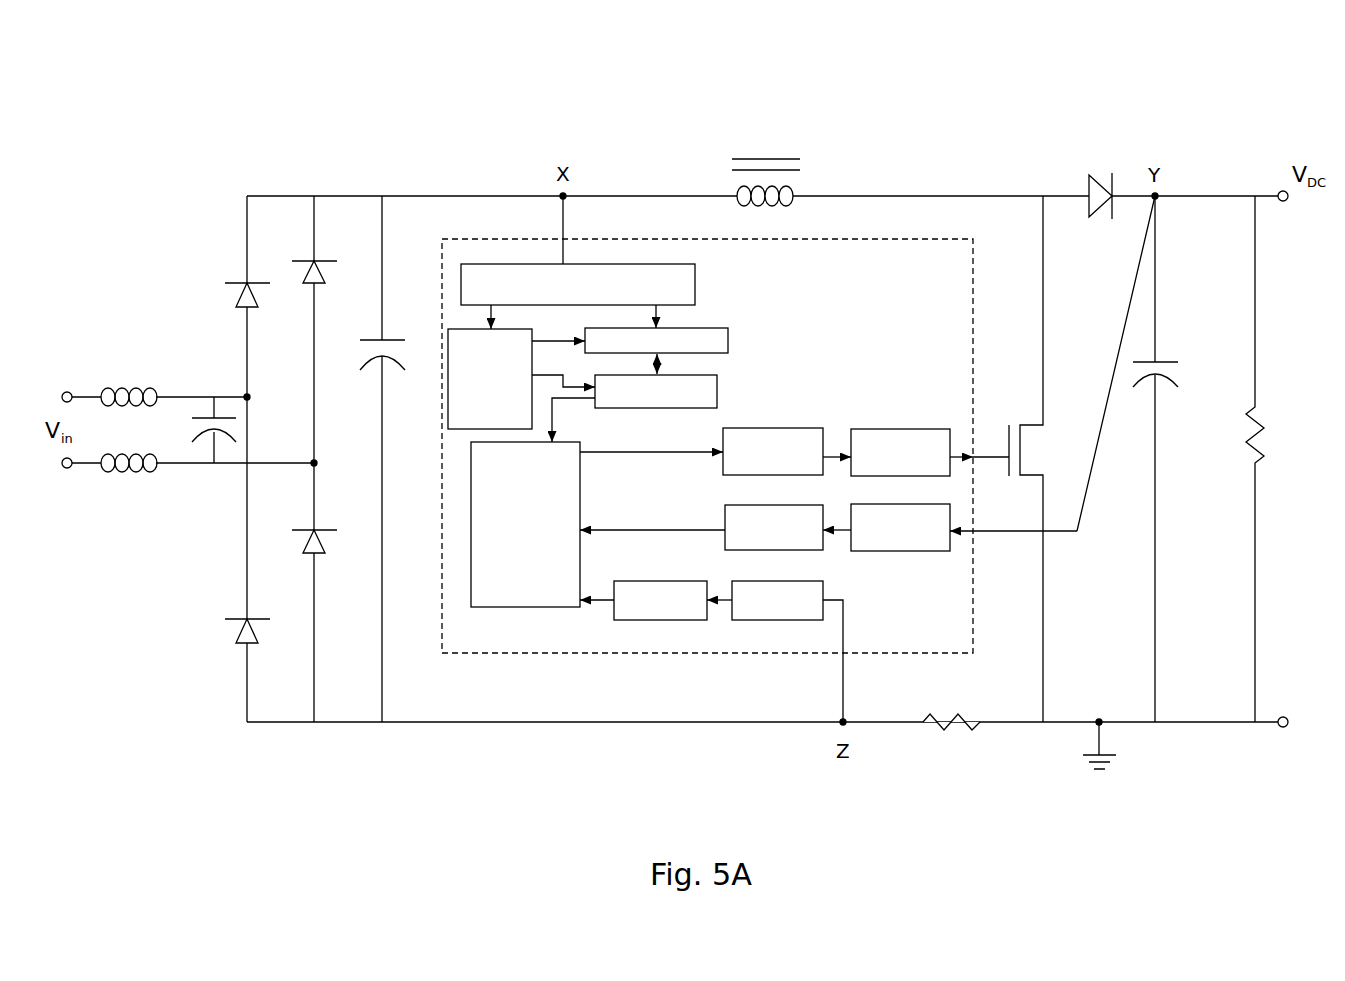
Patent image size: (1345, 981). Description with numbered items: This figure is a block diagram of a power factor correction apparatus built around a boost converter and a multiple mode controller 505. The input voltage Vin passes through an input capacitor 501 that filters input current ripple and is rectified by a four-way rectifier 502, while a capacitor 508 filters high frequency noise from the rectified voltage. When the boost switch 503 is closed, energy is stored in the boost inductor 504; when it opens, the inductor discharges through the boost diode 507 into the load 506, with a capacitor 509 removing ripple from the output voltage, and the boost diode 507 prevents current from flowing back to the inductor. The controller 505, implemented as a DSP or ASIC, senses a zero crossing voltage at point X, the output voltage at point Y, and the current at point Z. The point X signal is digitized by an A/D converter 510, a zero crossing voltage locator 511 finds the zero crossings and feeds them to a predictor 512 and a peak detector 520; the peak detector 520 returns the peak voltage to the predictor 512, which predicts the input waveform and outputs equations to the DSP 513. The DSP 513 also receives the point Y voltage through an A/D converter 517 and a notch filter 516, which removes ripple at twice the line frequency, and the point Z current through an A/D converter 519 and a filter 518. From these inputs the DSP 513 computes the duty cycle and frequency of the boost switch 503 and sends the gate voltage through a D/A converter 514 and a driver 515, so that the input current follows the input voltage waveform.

The capacitor 501 is at (194, 430).
The four-way rectifier 502 is at (266, 443).
The boost switch 503 is at (1008, 459).
The boost inductor 504 is at (766, 163).
The controller 505 is at (704, 468).
The load 506 is at (1281, 459).
The boost diode 507 is at (1102, 174).
The capacitor 508 is at (372, 368).
The capacitor 509 is at (1169, 459).
The A/D converter 510 is at (578, 286).
The zero crossing voltage locator 511 is at (521, 368).
The predictor 512 is at (657, 408).
The DSP 513 is at (596, 540).
The D/A converter 514 is at (787, 439).
The driver 515 is at (912, 440).
The notch filter 516 is at (704, 541).
The A/D converter 517 is at (890, 541).
The filter 518 is at (643, 614).
The A/D converter 519 is at (765, 614).
The peak detector 520 is at (682, 351).